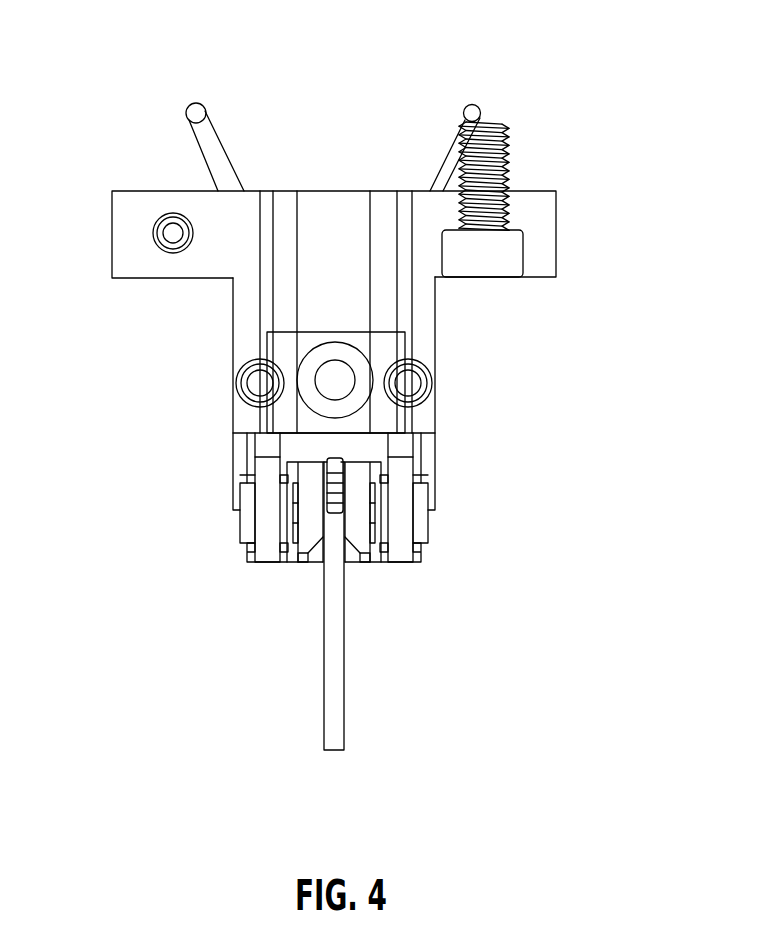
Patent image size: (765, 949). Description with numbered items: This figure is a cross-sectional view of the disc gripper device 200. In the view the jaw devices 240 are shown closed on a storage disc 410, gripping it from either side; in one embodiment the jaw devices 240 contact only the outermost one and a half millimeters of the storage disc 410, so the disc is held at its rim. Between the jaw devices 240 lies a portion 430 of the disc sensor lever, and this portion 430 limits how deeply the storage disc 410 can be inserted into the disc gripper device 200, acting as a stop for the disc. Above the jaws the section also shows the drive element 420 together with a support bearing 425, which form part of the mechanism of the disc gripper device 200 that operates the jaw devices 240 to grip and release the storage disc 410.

The disc gripper device 200 is at (355, 40).
The jaw devices 240 is at (308, 508).
The storage disc 410 is at (324, 699).
The drive element 420 is at (327, 374).
The support bearing 425 is at (368, 378).
The disc sensor lever portion 430 is at (335, 495).